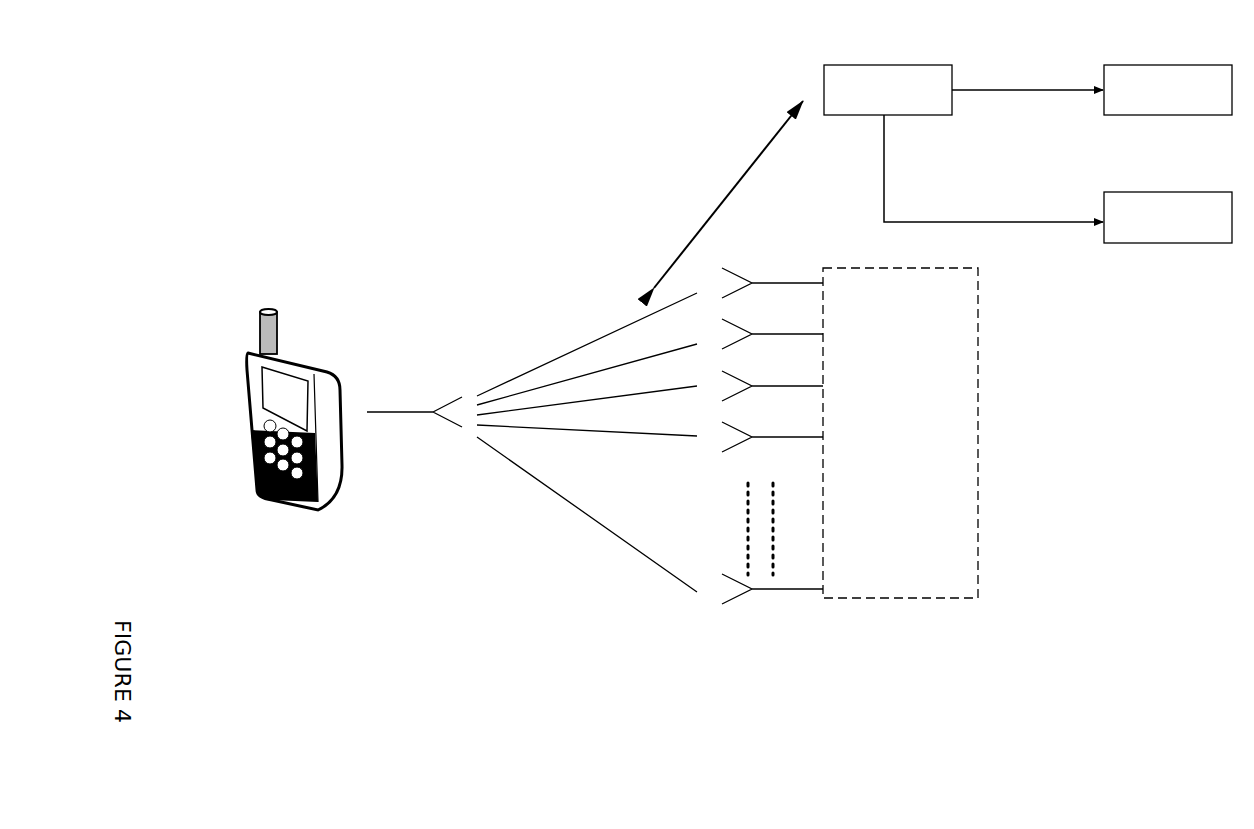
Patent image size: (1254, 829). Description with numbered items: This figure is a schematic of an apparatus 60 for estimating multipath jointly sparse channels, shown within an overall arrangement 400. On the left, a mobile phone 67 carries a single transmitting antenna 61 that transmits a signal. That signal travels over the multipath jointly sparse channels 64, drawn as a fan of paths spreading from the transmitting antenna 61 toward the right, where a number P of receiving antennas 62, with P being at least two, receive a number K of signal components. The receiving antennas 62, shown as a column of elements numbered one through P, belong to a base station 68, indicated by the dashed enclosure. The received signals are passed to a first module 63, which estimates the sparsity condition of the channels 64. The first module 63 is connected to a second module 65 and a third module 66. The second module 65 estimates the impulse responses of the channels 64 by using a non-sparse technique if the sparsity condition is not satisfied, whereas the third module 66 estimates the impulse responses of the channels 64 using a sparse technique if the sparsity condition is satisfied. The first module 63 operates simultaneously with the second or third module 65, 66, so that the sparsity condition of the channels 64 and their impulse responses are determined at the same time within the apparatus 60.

The wireless communication system 400 is at (150, 128).
The apparatus 60 is at (452, 248).
The transmitting antenna 61 is at (397, 412).
The receiving antennas 62 is at (803, 283).
The first module 63 is at (888, 90).
The multipath jointly sparse channels 64 is at (533, 370).
The second module 65 is at (1168, 90).
The third module 66 is at (1168, 217).
The mobile phone 67 is at (257, 330).
The base station 68 is at (978, 472).